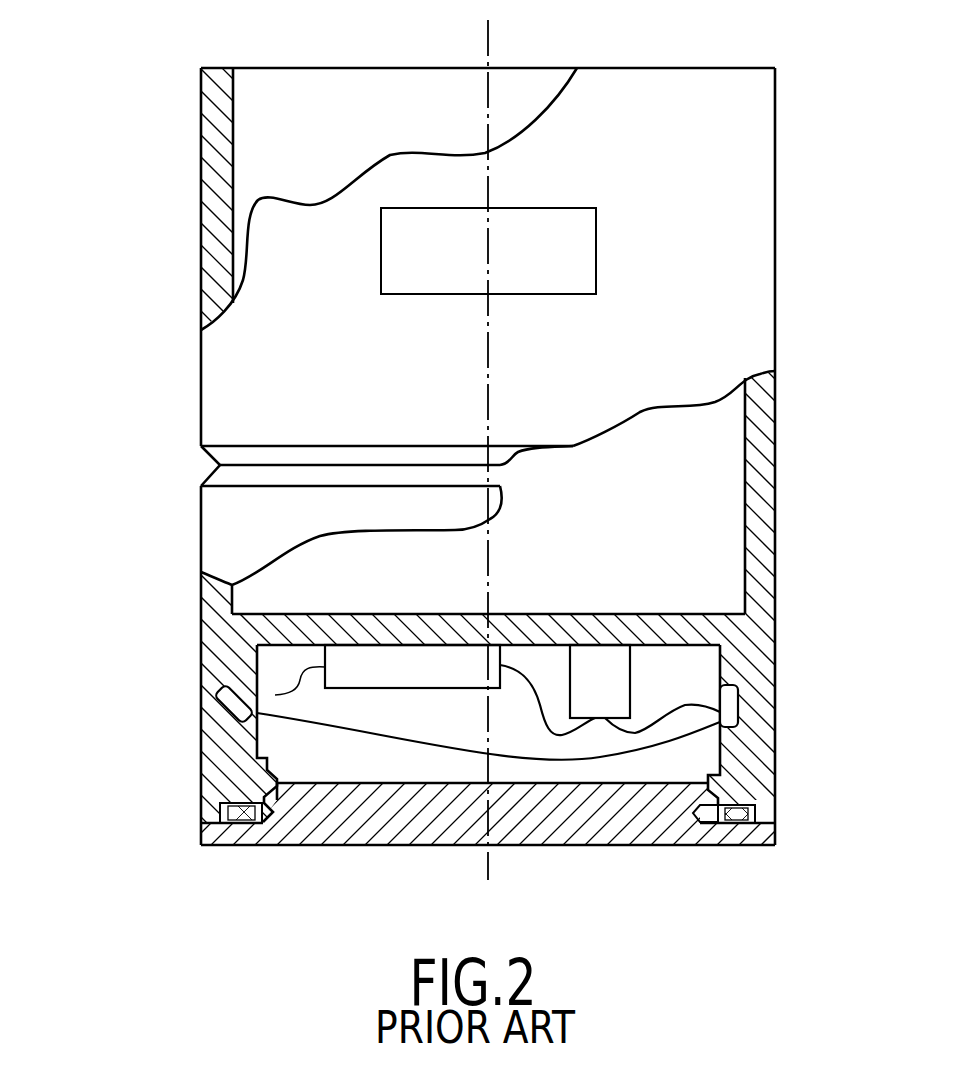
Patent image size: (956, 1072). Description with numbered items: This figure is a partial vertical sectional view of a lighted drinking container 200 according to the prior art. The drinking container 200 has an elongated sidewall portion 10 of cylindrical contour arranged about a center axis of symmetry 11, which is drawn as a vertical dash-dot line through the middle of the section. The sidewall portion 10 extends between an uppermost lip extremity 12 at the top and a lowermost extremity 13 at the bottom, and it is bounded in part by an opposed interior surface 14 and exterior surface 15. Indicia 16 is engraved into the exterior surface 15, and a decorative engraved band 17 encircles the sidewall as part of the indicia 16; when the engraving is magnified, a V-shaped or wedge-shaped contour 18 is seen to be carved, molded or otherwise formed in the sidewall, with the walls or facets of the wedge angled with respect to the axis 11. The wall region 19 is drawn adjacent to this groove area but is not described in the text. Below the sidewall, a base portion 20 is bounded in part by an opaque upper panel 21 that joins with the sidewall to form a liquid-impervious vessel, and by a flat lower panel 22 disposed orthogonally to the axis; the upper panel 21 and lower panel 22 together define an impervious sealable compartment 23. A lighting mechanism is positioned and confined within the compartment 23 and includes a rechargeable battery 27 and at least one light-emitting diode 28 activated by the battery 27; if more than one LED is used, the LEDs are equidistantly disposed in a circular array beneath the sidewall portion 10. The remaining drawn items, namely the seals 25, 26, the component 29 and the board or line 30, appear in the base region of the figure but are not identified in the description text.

The drinking container 200 is at (41, 465).
The sidewall portion 10 is at (778, 328).
The center axis of symmetry 11 is at (490, 47).
The uppermost lip extremity 12 is at (778, 68).
The lowermost extremity 13 is at (200, 656).
The interior surface 14 is at (745, 527).
The exterior surface 15 is at (201, 412).
The indicia 16 is at (555, 206).
The decorative engraved band 17 is at (398, 446).
The wedge-shaped contour 18 is at (201, 470).
The lower chamber wall 19 is at (235, 455).
The base portion 20 is at (784, 628).
The opaque upper panel 21 is at (604, 614).
The flat lower panel 22 is at (597, 846).
The sealable compartment 23 is at (532, 740).
The seal ring 25 is at (762, 802).
The seal ring 26 is at (238, 802).
The rechargeable battery 27 is at (430, 679).
The light-emitting diode 28 is at (232, 706).
The electronic component 29 is at (615, 687).
The circuit board 30 is at (300, 693).